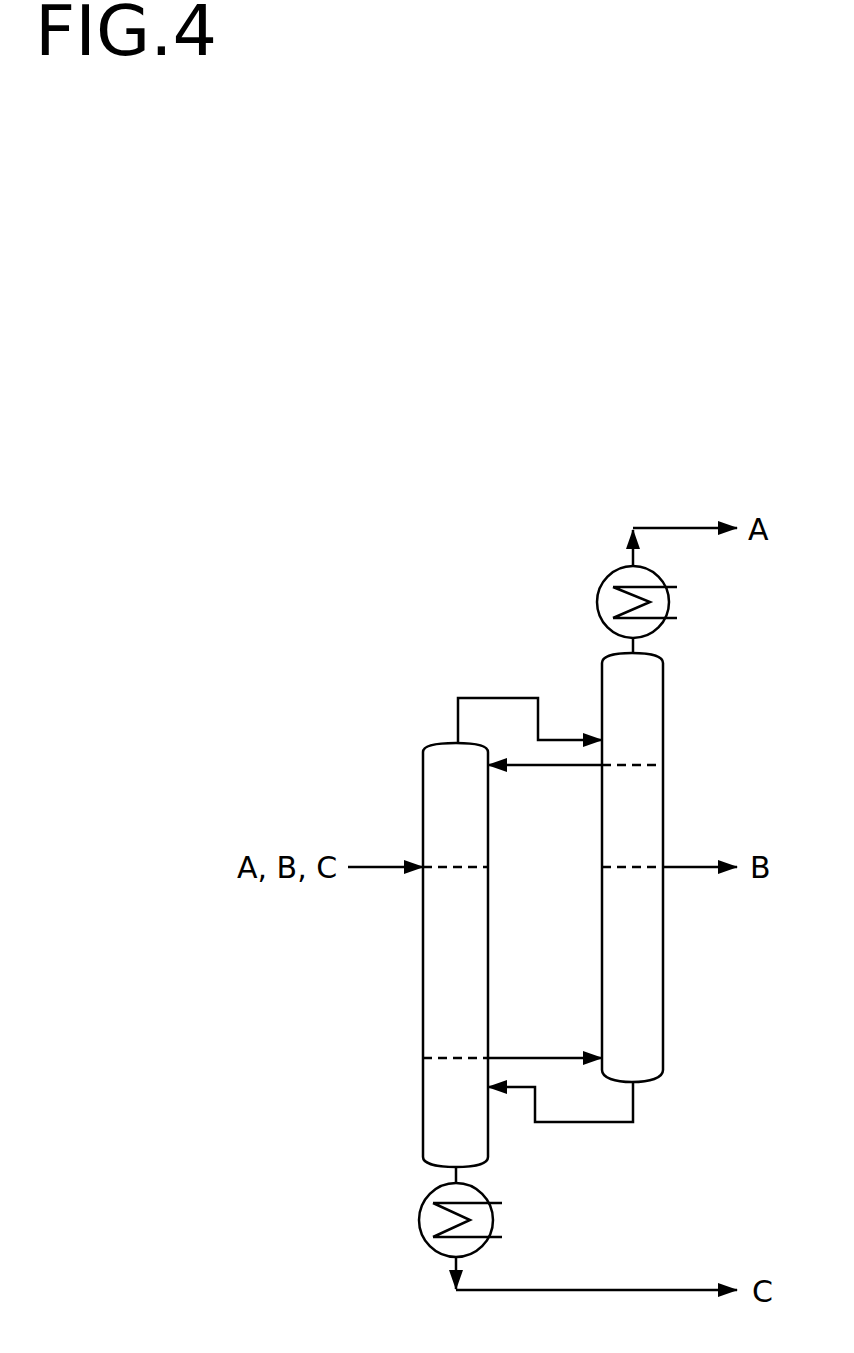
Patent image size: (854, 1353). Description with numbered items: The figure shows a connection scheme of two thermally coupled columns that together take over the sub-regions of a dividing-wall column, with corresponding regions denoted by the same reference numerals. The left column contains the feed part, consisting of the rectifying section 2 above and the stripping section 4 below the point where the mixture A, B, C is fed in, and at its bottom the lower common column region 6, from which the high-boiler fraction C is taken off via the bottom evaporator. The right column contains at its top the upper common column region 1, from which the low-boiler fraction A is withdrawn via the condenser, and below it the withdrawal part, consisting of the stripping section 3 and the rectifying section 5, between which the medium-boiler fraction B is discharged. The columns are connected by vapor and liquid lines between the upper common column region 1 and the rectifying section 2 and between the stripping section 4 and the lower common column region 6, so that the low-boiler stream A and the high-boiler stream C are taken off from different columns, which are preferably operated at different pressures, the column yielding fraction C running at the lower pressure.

The upper common column region 1 is at (632, 701).
The rectifying section of the feed part 2 is at (455, 805).
The stripping section of the withdrawal part 3 is at (632, 816).
The stripping section of the feed part 4 is at (455, 962).
The rectifying section of the withdrawal part 5 is at (632, 974).
The lower common column region 6 is at (455, 1112).